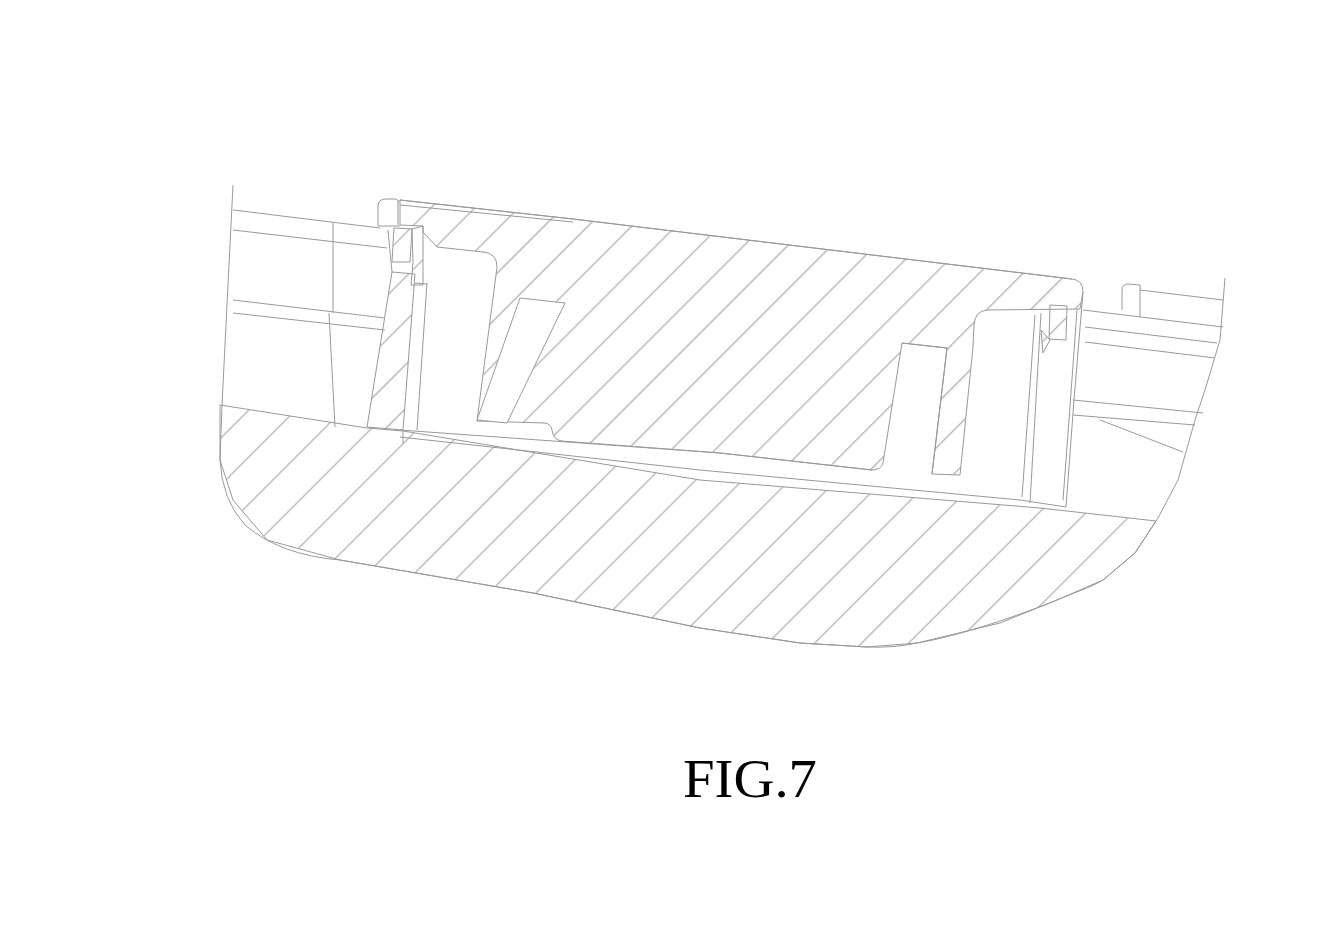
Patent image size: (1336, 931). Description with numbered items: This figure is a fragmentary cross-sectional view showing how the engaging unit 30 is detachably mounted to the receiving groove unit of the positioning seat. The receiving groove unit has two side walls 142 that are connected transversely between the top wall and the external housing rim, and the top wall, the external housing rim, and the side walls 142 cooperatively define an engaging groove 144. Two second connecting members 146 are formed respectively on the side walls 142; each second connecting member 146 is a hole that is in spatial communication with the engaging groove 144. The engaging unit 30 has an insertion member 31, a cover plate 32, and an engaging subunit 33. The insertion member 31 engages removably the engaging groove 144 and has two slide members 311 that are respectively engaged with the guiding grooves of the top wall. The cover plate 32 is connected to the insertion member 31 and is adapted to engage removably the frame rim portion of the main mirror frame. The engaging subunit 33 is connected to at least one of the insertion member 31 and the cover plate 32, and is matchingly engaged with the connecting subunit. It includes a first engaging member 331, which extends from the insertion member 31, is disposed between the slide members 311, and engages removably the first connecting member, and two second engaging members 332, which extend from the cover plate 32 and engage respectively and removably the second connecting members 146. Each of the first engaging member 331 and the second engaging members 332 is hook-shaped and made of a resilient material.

The engaging unit 30 is at (710, 402).
The cover plate 32 is at (705, 233).
The insertion member 31 is at (649, 491).
The slide members 311 is at (498, 363).
The engaging subunit 33 is at (710, 578).
The first engaging member 331 is at (730, 422).
The second engaging members 332 is at (417, 273).
The side walls 142 is at (392, 370).
The engaging groove 144 is at (1005, 437).
The second connecting members 146 is at (407, 277).